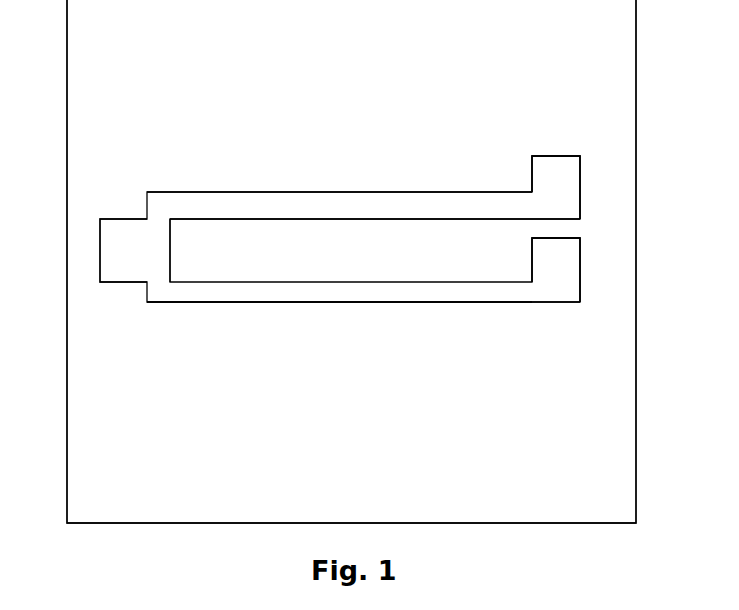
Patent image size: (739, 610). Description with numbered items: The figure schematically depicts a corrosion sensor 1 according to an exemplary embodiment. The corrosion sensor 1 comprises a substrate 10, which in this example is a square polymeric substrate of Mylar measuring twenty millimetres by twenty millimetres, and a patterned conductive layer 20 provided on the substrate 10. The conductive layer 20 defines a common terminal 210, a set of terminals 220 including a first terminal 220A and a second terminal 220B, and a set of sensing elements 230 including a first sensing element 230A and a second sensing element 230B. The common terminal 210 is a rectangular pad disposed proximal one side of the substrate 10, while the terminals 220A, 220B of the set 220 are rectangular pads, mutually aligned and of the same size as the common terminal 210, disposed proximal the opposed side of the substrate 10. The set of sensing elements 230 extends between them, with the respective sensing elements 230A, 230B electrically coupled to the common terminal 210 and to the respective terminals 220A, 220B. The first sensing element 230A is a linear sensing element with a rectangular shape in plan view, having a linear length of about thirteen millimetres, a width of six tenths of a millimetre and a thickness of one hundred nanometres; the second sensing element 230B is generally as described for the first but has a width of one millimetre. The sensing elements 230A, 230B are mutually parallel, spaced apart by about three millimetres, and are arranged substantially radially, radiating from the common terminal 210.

The corrosion sensor 1 is at (676, 247).
The substrate 10 is at (67, 523).
The patterned conductive layer 20 is at (425, 333).
The common terminal 210 is at (100, 282).
The set of terminals 220 is at (596, 238).
The first terminal 220A is at (580, 302).
The second terminal 220B is at (580, 156).
The set of sensing elements 230 is at (244, 326).
The first sensing element 230A is at (318, 302).
The second sensing element 230B is at (333, 219).